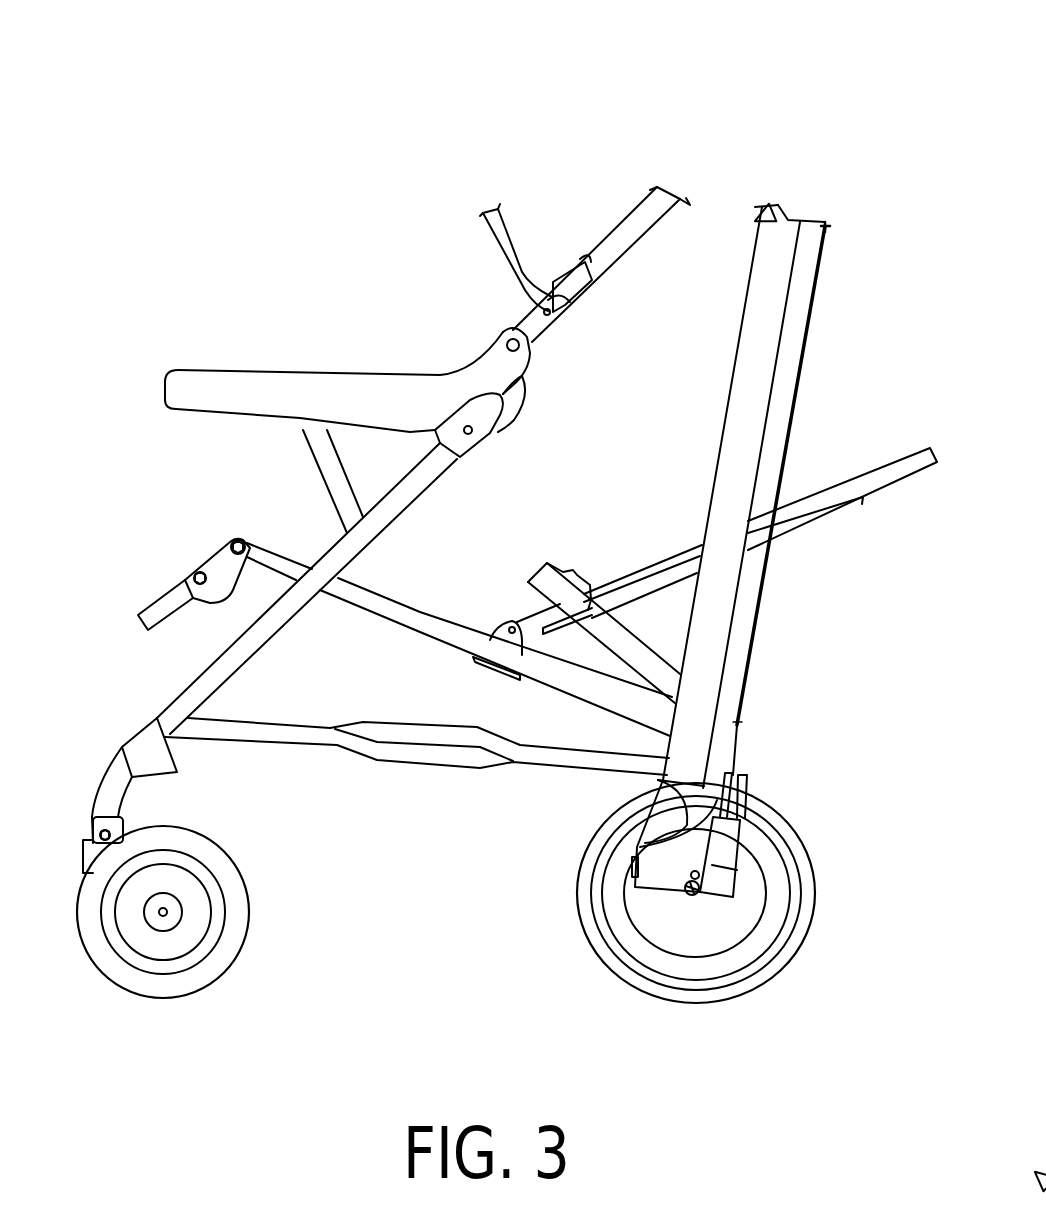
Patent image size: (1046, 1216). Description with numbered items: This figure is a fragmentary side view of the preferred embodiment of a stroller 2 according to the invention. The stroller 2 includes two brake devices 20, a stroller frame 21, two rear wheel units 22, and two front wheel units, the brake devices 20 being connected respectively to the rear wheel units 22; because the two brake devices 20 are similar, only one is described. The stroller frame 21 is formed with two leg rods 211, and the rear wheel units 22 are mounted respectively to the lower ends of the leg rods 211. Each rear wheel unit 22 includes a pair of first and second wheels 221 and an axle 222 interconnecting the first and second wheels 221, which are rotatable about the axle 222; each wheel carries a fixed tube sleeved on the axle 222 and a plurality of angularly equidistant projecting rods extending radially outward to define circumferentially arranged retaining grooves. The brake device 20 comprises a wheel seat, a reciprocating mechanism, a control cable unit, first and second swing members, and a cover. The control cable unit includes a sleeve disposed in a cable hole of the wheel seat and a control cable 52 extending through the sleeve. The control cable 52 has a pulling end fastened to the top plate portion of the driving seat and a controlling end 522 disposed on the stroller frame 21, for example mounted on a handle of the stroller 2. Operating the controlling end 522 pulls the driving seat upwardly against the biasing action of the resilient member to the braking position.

The stroller 2 is at (658, 158).
The brake device 20 is at (750, 871).
The stroller frame 21 is at (782, 325).
The leg rod 211 is at (718, 608).
The rear wheel unit 22 is at (796, 982).
The first and second wheels 221 is at (792, 918).
The axle 222 is at (699, 900).
The control cable 52 is at (797, 393).
The controlling end 522 is at (828, 232).